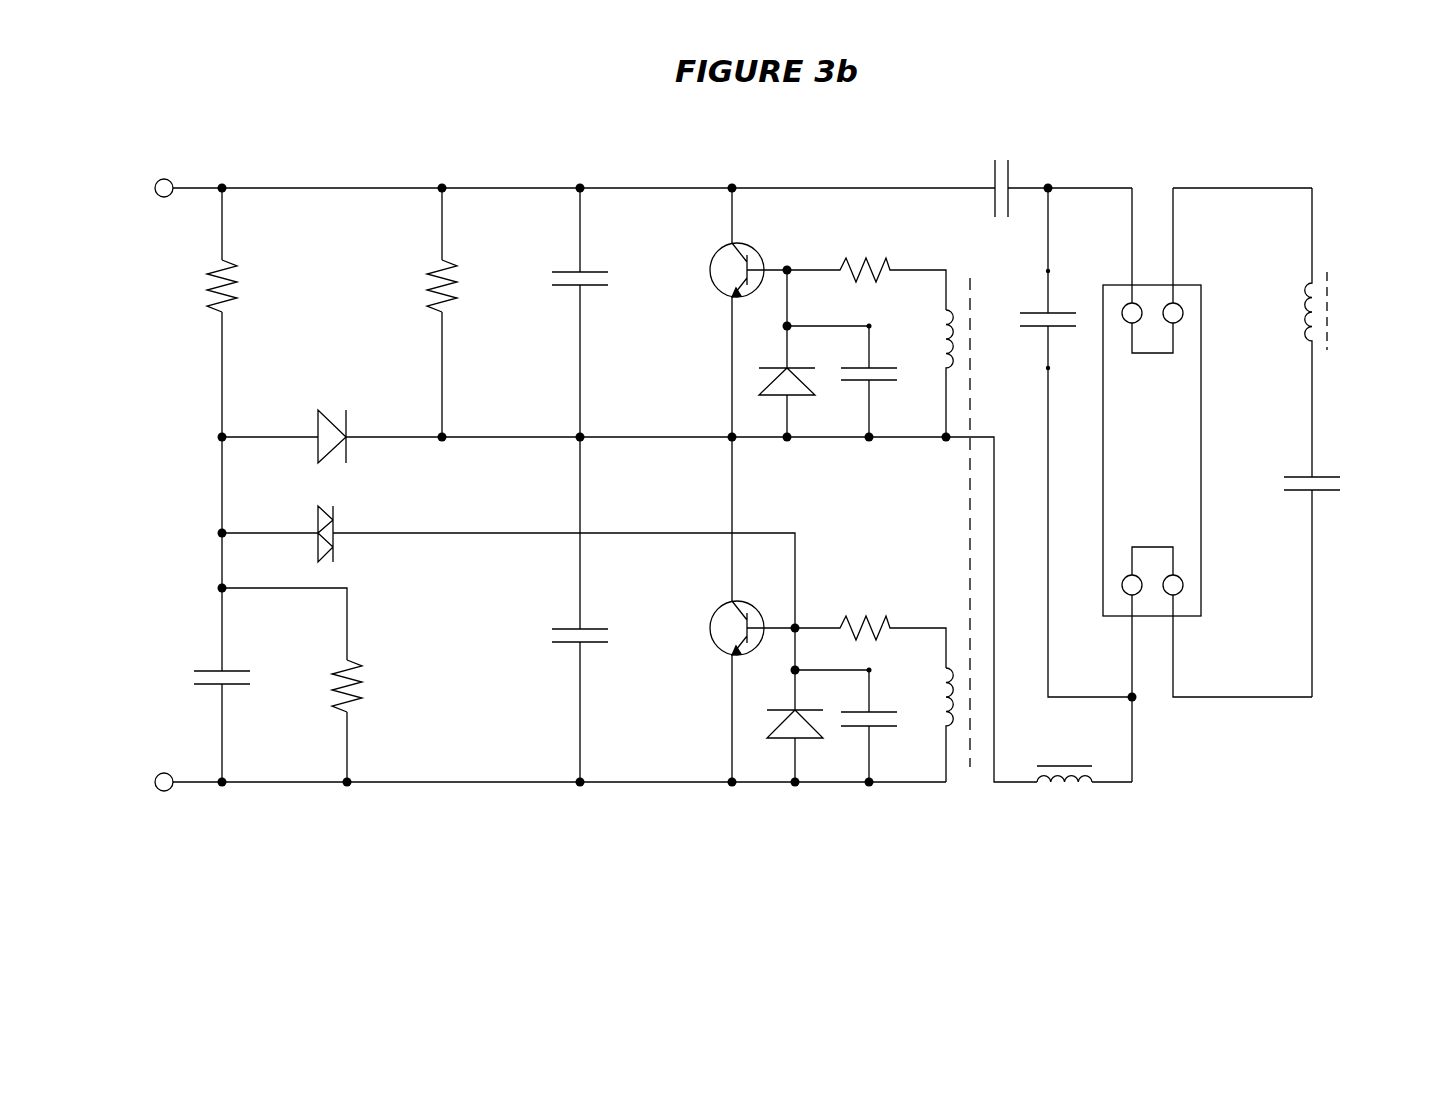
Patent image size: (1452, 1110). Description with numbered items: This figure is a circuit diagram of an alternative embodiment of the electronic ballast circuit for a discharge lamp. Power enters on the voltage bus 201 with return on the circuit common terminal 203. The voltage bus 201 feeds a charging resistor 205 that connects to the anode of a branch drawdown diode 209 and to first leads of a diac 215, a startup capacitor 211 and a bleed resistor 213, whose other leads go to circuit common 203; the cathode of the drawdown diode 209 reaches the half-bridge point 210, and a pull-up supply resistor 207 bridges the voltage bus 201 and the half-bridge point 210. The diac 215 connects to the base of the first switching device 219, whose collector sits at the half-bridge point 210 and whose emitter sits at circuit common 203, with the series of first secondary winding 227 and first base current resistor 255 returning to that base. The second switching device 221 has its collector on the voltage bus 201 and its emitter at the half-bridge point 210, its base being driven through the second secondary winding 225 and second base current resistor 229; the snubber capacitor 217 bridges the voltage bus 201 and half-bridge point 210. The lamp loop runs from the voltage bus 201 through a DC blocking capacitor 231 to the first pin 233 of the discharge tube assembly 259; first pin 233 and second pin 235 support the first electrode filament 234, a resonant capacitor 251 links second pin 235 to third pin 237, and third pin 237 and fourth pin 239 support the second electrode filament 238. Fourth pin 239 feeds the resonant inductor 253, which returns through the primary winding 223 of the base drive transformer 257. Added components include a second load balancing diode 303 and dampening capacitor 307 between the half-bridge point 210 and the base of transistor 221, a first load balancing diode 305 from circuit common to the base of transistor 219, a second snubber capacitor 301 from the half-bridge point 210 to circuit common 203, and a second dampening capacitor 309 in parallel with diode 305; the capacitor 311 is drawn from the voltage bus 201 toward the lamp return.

The voltage bus 201 is at (149, 188).
The circuit common terminal 203 is at (149, 782).
The charging resistor 205 is at (238, 262).
The pull-up supply resistor 207 is at (459, 262).
The branch drawdown diode 209 is at (311, 444).
The half-bridge point 210 is at (482, 447).
The startup capacitor 211 is at (239, 654).
The bleed resistor 213 is at (363, 661).
The diac 215 is at (304, 540).
The snubber capacitor 217 is at (596, 256).
The first switching device 219 is at (745, 643).
The second switching device 221 is at (741, 285).
The primary winding 223 is at (1330, 332).
The second secondary winding 225 is at (935, 372).
The first secondary winding 227 is at (935, 723).
The second base current resistor 229 is at (866, 275).
The DC blocking capacitor 231 is at (979, 195).
The first pin 233 is at (1122, 255).
The first electrode filament 234 is at (1154, 338).
The second pin 235 is at (1189, 255).
The third pin 237 is at (1237, 636).
The second electrode filament 238 is at (1155, 561).
The fourth pin 239 is at (1125, 678).
The resonant capacitor 251 is at (1321, 572).
The resonant inductor 253 is at (1062, 788).
The first base current resistor 255 is at (870, 632).
The base drive transformer 257 is at (1372, 337).
The discharge tube assembly 259 is at (1215, 407).
The second snubber capacitor 301 is at (597, 613).
The second load balancing diode 303 is at (797, 398).
The first load balancing diode 305 is at (801, 740).
The dampening capacitor 307 is at (852, 381).
The second dampening capacitor 309 is at (857, 726).
The capacitor 311 is at (1070, 442).